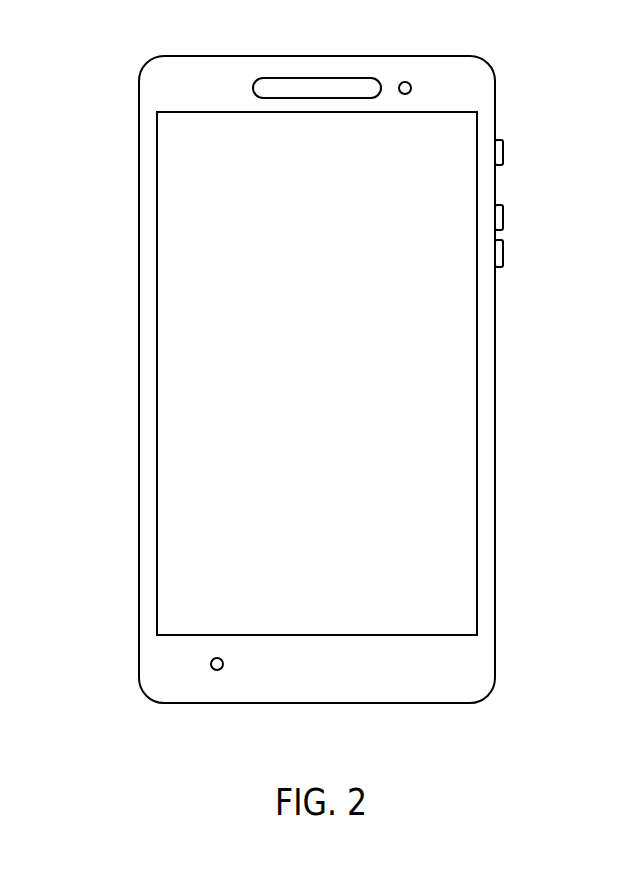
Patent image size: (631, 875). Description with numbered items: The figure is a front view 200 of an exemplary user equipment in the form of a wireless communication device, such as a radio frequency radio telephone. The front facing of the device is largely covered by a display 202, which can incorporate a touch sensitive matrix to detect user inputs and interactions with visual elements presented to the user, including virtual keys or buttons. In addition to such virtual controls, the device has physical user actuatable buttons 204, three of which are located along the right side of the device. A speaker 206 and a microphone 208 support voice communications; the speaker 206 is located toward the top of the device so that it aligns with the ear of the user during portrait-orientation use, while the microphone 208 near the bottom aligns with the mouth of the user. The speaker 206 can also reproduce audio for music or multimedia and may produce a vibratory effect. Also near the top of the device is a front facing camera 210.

The front view 200 is at (106, 66).
The display 202 is at (442, 367).
The physical user actuatable buttons 204 is at (503, 152).
The speaker 206 is at (317, 78).
The microphone 208 is at (217, 670).
The front facing camera 210 is at (404, 82).